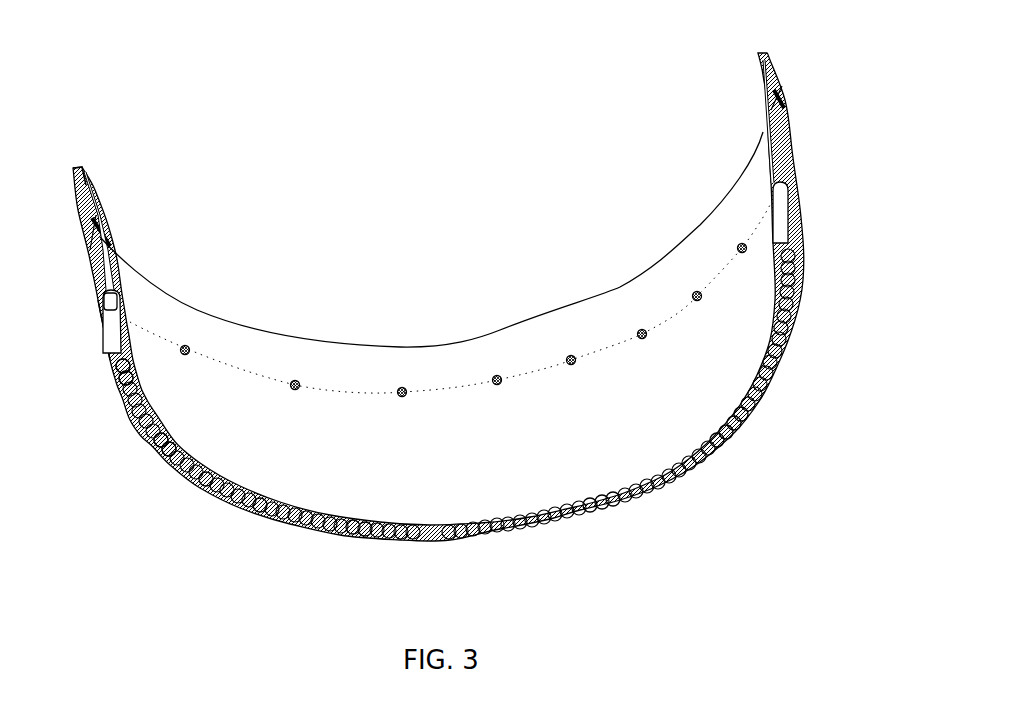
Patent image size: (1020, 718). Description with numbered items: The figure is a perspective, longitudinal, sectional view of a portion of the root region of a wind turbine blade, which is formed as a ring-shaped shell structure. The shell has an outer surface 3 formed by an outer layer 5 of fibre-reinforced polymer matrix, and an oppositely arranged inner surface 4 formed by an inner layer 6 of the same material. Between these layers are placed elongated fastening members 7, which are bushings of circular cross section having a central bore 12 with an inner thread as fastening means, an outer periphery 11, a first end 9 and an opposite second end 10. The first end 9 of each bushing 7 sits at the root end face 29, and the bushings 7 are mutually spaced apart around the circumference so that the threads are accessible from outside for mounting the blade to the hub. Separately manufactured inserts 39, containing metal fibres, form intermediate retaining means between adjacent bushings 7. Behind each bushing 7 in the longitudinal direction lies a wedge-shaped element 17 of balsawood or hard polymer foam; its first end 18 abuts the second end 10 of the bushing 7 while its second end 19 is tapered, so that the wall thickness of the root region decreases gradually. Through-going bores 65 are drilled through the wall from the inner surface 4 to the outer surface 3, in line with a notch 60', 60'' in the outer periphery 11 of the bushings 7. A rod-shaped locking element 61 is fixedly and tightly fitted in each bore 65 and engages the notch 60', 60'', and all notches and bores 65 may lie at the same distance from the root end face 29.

The outer surface 3 is at (430, 541).
The inner surface 4 is at (252, 363).
The outer layer 5 is at (604, 501).
The inner layer 6 is at (735, 381).
The elongated fastening member 7 is at (160, 452).
The first end 9 is at (116, 378).
The second end 10 is at (103, 277).
The outer periphery 11 is at (103, 301).
The central bore 12 is at (205, 488).
The wedge-shaped element 17 is at (106, 221).
The first end 18 is at (115, 258).
The second end 19 is at (84, 180).
The root end face 29 is at (723, 433).
The insert 39 is at (356, 540).
The notch 60' is at (151, 300).
The notch 60'' is at (735, 151).
The rod-shaped locking element 61 is at (450, 301).
The through-going bore 65 is at (402, 386).